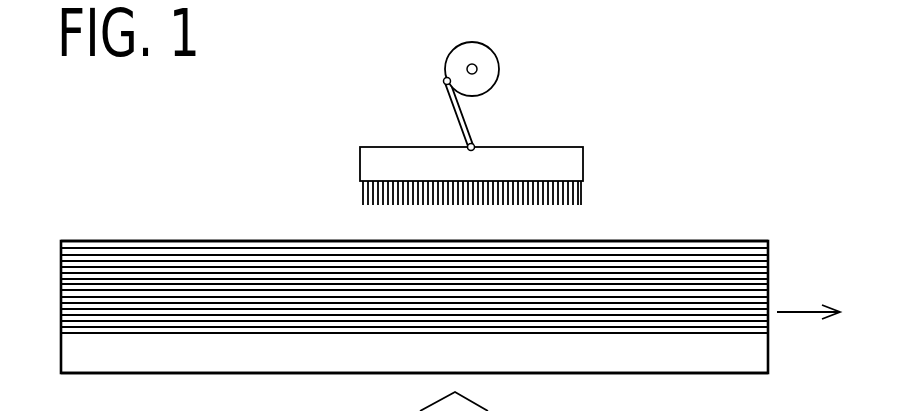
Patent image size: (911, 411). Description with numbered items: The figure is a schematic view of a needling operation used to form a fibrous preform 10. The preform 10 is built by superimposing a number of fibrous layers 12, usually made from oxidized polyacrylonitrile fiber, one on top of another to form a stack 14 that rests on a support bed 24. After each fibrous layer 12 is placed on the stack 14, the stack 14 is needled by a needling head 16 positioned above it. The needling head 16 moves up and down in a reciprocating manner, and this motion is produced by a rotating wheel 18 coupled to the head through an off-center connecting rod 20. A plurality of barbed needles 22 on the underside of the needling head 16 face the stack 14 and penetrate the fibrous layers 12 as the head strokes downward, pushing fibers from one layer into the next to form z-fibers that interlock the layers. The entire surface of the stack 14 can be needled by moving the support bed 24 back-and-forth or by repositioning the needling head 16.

The fibrous preform 10 is at (148, 212).
The fibrous layers 12 is at (58, 250).
The stack 14 is at (262, 239).
The needling head 16 is at (558, 142).
The rotating wheel 18 is at (499, 51).
The off-center connecting rod 20 is at (469, 118).
The barbed needles 22 is at (360, 198).
The support bed 24 is at (100, 376).